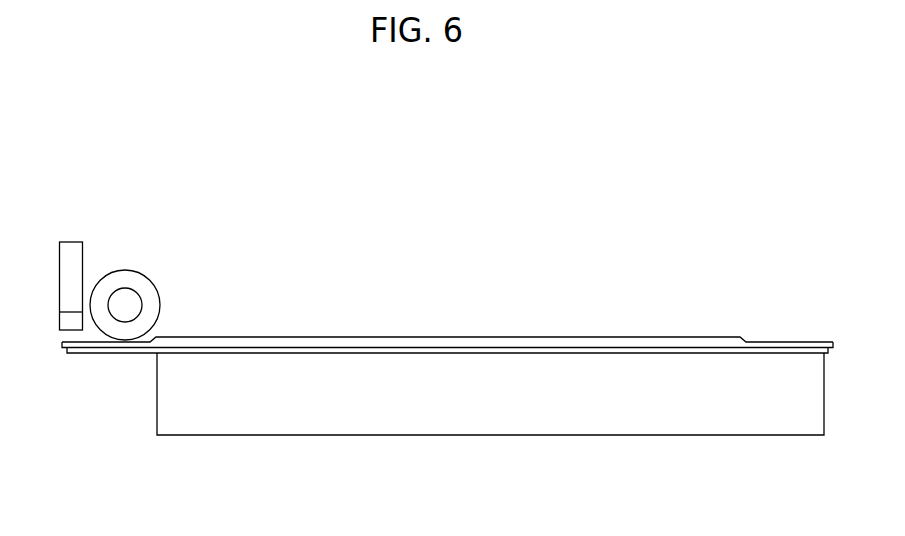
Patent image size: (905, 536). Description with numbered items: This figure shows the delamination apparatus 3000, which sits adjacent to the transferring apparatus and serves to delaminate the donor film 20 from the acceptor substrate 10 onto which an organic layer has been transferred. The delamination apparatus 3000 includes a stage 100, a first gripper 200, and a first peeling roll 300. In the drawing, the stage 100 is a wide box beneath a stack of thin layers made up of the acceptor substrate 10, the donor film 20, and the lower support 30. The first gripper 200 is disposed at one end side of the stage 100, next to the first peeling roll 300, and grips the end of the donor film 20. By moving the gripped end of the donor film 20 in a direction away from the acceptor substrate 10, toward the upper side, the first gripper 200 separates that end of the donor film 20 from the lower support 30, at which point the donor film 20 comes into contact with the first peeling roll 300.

The delamination apparatus 3000 is at (476, 178).
The first gripper 200 is at (73, 241).
The first peeling roll 300 is at (125, 295).
The lower support 30 is at (598, 352).
The donor film 20 is at (503, 338).
The acceptor substrate 10 is at (341, 348).
The stage 100 is at (455, 422).